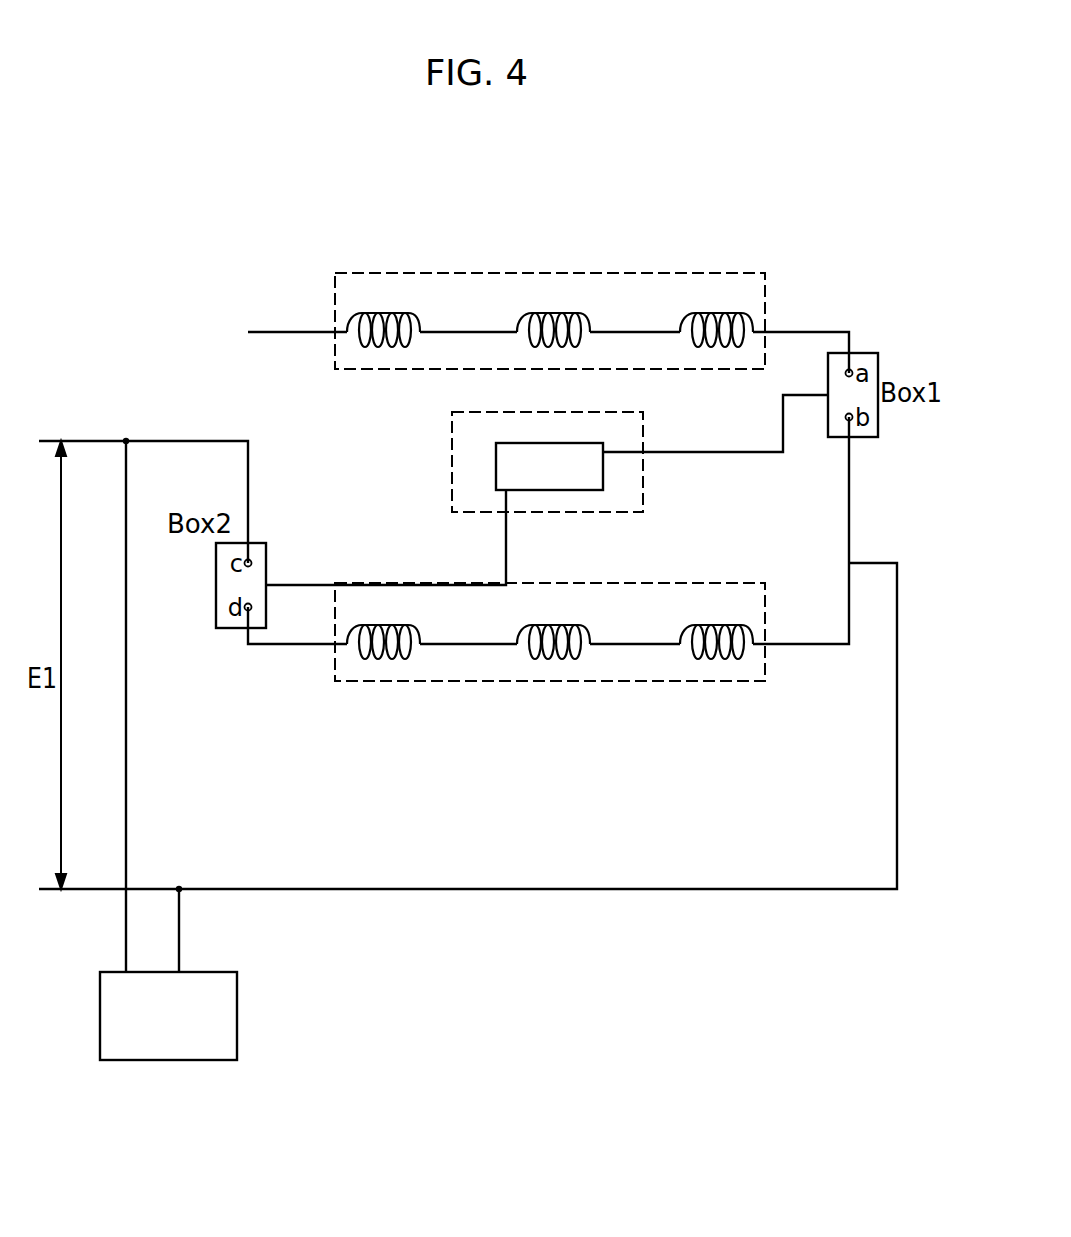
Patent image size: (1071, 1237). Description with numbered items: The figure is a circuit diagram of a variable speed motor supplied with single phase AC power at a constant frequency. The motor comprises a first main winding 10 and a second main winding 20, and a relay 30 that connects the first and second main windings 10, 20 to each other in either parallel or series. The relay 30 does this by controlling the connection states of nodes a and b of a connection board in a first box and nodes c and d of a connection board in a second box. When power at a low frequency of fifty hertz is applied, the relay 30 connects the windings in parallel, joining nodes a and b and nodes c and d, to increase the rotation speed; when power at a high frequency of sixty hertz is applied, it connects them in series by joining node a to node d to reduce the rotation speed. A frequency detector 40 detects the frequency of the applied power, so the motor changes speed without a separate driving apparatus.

The first main winding 10 is at (648, 272).
The second main winding 20 is at (610, 681).
The relay 30 is at (643, 470).
The frequency detector 40 is at (237, 1015).